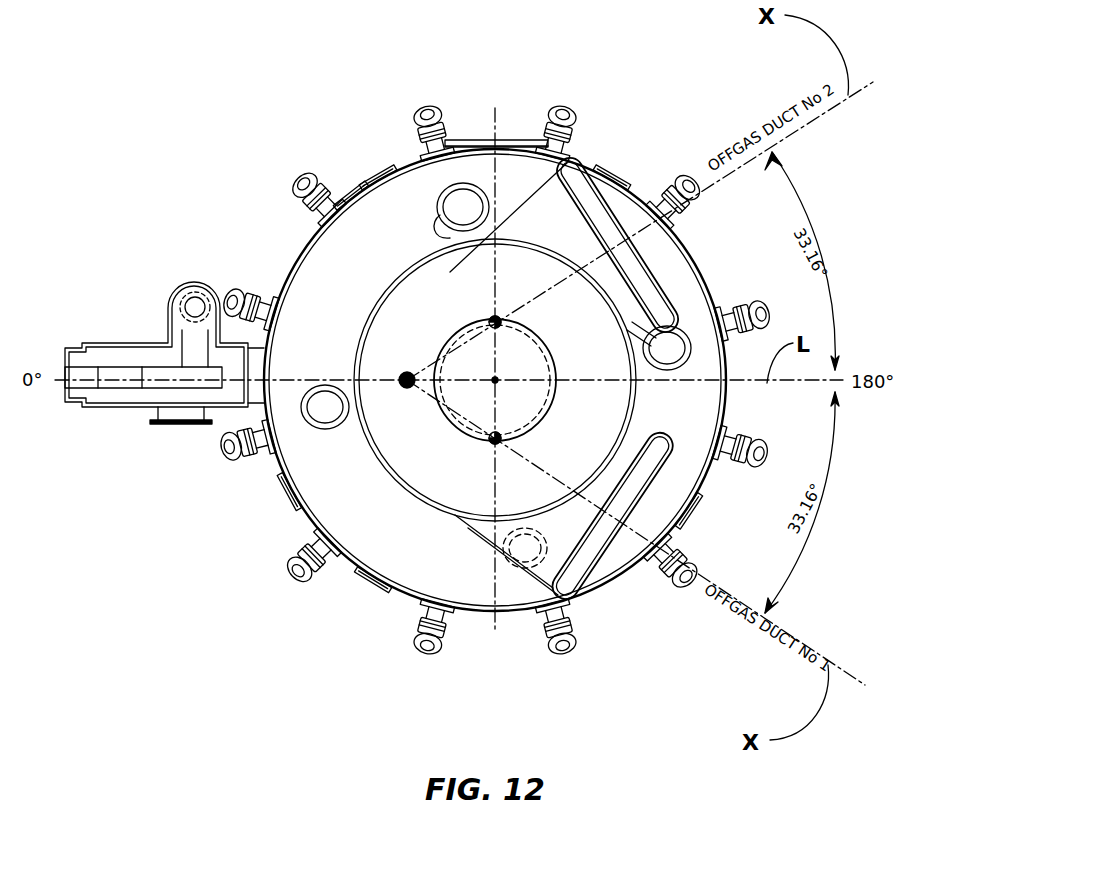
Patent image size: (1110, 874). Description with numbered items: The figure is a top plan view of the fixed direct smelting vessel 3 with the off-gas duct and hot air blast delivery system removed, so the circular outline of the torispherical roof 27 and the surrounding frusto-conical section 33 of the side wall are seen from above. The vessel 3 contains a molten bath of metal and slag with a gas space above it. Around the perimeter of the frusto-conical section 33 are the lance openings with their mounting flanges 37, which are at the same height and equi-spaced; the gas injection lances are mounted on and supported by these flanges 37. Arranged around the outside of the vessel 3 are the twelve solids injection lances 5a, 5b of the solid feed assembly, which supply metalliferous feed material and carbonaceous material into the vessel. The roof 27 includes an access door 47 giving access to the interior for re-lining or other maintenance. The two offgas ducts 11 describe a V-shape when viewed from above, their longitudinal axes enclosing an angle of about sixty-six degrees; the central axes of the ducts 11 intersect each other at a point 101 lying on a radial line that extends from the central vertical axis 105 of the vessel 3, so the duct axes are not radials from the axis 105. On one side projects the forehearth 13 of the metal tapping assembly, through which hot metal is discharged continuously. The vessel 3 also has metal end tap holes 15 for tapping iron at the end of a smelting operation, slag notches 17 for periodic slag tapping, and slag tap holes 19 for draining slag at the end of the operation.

The fixed direct smelting vessel 3 is at (397, 150).
The solids injection lance 5a is at (565, 105).
The solids injection lance 5b is at (305, 200).
The offgas duct 11 is at (566, 205).
The forehearth 13 is at (145, 340).
The metal end tap hole 15 is at (315, 538).
The slag notch 17 is at (375, 168).
The slag tap hole 19 is at (340, 178).
The torispherical roof 27 is at (450, 275).
The frusto-conical section 33 is at (338, 314).
The mounting flange 37 is at (440, 205).
The access door 47 is at (527, 410).
The point on radial line 101 is at (407, 390).
The central vertical axis 105 is at (500, 373).